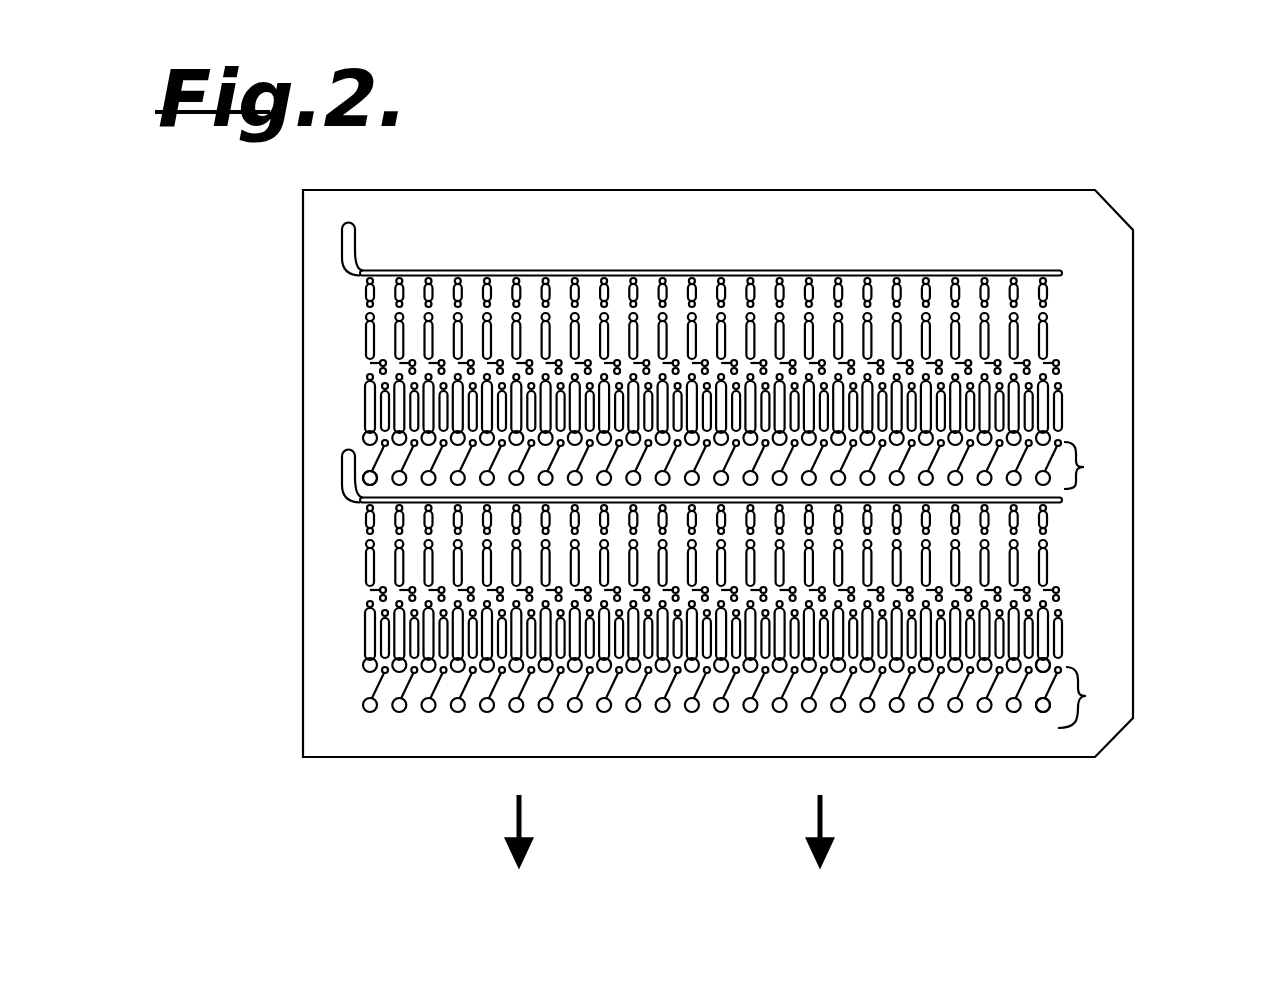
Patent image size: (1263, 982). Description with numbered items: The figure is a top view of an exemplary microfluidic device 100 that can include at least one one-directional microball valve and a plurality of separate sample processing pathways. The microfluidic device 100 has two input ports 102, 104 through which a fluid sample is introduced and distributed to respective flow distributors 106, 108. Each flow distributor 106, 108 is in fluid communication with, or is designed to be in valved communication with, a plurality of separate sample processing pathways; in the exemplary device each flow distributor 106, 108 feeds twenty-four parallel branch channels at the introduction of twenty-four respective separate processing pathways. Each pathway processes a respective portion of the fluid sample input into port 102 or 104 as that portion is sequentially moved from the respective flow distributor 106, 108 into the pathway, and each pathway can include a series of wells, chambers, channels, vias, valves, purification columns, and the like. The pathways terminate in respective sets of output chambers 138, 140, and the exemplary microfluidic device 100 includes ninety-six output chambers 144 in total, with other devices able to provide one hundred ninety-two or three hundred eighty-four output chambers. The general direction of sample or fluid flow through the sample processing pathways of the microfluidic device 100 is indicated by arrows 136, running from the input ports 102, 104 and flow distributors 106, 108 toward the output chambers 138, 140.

The microfluidic device 100 is at (1066, 112).
The input port 102 is at (343, 233).
The input port 104 is at (338, 465).
The flow distributor 106 is at (830, 273).
The flow distributor 108 is at (1033, 498).
The arrows 136 is at (522, 813).
The set of output chambers 138 is at (1090, 467).
The set of output chambers 140 is at (1090, 696).
The output chamber 144 is at (370, 470).